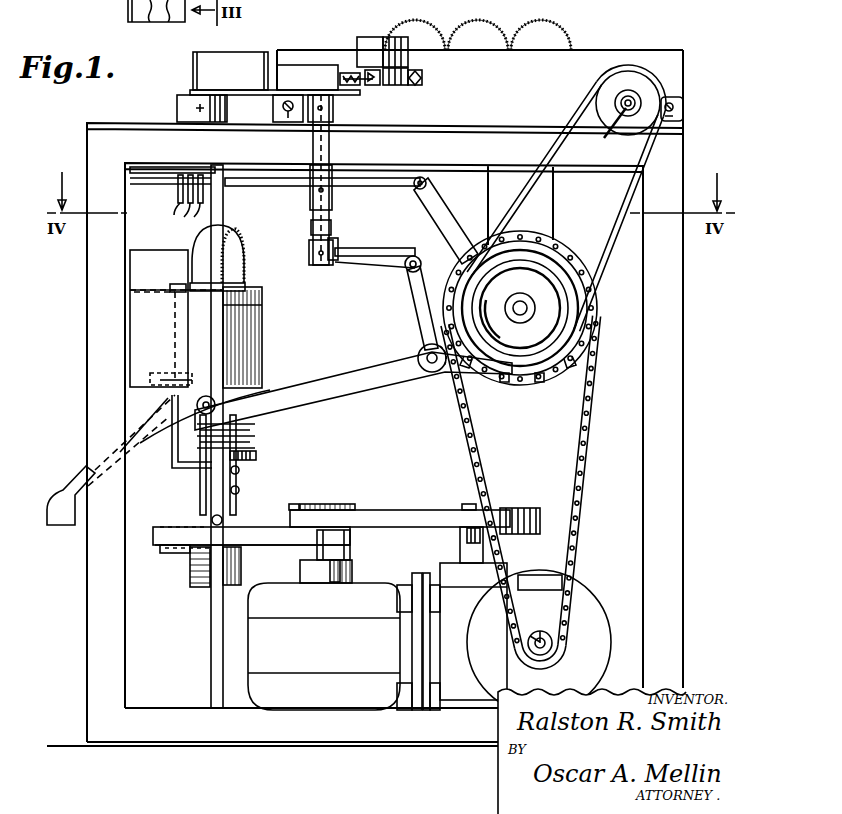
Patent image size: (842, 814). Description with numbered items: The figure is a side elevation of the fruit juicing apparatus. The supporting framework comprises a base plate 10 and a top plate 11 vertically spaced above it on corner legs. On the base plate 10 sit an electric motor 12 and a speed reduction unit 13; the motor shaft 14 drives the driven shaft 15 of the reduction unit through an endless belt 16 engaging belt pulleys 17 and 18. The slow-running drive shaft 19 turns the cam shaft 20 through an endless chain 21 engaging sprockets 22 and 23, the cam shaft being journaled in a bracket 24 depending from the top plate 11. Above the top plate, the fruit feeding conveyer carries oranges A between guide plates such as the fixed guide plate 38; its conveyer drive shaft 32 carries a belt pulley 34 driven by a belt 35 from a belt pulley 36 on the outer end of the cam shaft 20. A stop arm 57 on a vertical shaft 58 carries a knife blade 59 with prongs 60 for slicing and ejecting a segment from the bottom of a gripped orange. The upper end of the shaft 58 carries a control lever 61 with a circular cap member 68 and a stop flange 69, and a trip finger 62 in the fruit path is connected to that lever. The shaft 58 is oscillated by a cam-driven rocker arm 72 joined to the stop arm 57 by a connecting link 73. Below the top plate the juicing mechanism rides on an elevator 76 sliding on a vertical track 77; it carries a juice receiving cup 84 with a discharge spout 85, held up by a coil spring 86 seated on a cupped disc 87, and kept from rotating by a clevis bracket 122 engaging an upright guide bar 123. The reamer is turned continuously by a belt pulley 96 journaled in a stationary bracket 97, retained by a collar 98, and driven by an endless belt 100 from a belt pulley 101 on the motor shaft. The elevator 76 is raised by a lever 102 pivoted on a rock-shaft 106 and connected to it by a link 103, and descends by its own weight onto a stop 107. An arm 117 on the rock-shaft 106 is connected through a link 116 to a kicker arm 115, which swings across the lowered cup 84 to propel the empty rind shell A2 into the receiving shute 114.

The base plate 10 is at (140, 747).
The top plate 11 is at (112, 122).
The electric motor 12 is at (340, 653).
The speed reduction unit 13 is at (456, 649).
The motor shaft 14 is at (331, 503).
The driven shaft 15 is at (471, 502).
The endless belt 16 is at (392, 510).
The belt pulley 17 is at (297, 502).
The belt pulley 18 is at (512, 508).
The drive shaft 19 is at (550, 652).
The cam shaft 20 is at (518, 312).
The endless chain 21 is at (584, 452).
The sprocket 22 is at (546, 612).
The sprocket 23 is at (541, 380).
The bracket 24 is at (556, 222).
The conveyer drive shaft 32 is at (612, 143).
The belt pulley 34 is at (637, 82).
The belt 35 is at (610, 226).
The belt pulley 36 is at (548, 274).
The guide plate 38 is at (518, 88).
The stop arm 57 is at (172, 190).
The vertical shaft 58 is at (334, 218).
The knife blade 59 is at (176, 181).
The prongs 60 is at (192, 204).
The control lever 61 is at (266, 98).
The trip finger 62 is at (368, 37).
The circular cap member 68 is at (192, 108).
The stop flange 69 is at (228, 60).
The rocker arm 72 is at (445, 213).
The connecting link 73 is at (370, 186).
The elevator 76 is at (238, 490).
The track 77 is at (212, 633).
The juice receiving cup 84 is at (263, 333).
The discharge spout 85 is at (60, 472).
The coil spring 86 is at (255, 431).
The cupped disc 87 is at (257, 455).
The belt pulley 96 is at (165, 553).
The stationary bracket 97 is at (197, 584).
The collar 98 is at (231, 590).
The endless belt 100 is at (290, 546).
The belt pulley 101 is at (352, 553).
The lever 102 is at (321, 386).
The link 103 is at (201, 428).
The rock-shaft 106 is at (431, 368).
The stop 107 is at (212, 520).
The shute 114 is at (162, 333).
The kicker arm 115 is at (382, 270).
The link 116 is at (376, 254).
The arm 117 is at (414, 306).
The clevis bracket 122 is at (183, 375).
The guide bar 123 is at (178, 468).
The oranges A is at (458, 28).
The empty rind shell A2 is at (244, 256).